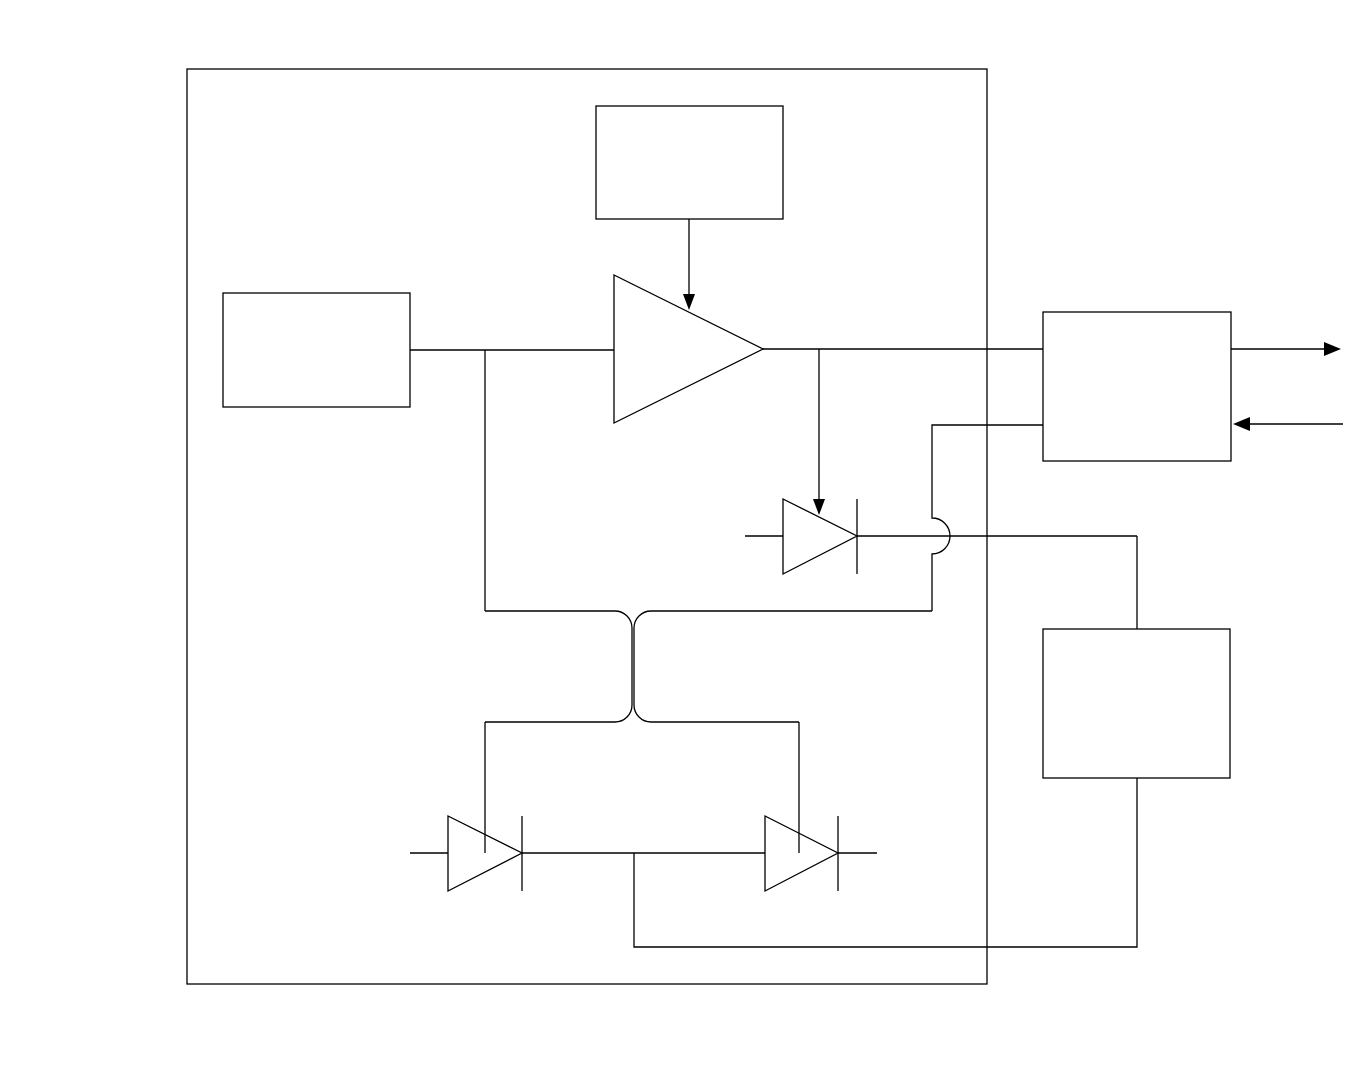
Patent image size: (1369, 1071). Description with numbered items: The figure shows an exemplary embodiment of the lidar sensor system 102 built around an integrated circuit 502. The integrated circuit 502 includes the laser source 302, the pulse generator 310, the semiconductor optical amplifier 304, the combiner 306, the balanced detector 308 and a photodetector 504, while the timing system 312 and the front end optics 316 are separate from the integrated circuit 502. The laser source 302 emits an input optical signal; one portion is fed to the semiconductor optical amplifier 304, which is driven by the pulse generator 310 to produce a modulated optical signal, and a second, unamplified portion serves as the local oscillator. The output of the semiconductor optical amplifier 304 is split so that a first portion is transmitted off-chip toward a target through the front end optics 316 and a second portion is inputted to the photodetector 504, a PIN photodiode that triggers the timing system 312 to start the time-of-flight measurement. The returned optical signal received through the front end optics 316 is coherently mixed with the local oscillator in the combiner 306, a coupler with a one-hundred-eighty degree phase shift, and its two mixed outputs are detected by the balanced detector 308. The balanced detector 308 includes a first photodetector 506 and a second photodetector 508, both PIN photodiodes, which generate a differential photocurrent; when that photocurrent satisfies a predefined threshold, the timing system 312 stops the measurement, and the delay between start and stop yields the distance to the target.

The lidar sensor system 102 is at (129, 120).
The integrated circuit 502 is at (988, 122).
The laser source 302 is at (316, 350).
The pulse generator 310 is at (689, 208).
The semiconductor optical amplifier 304 is at (688, 349).
The front end optics 316 is at (1137, 386).
The timing system 312 is at (1136, 703).
The photodetector 504 is at (783, 516).
The combiner 306 is at (621, 594).
The balanced detector 308 is at (757, 869).
The first photodetector 506 is at (448, 831).
The second photodetector 508 is at (765, 831).